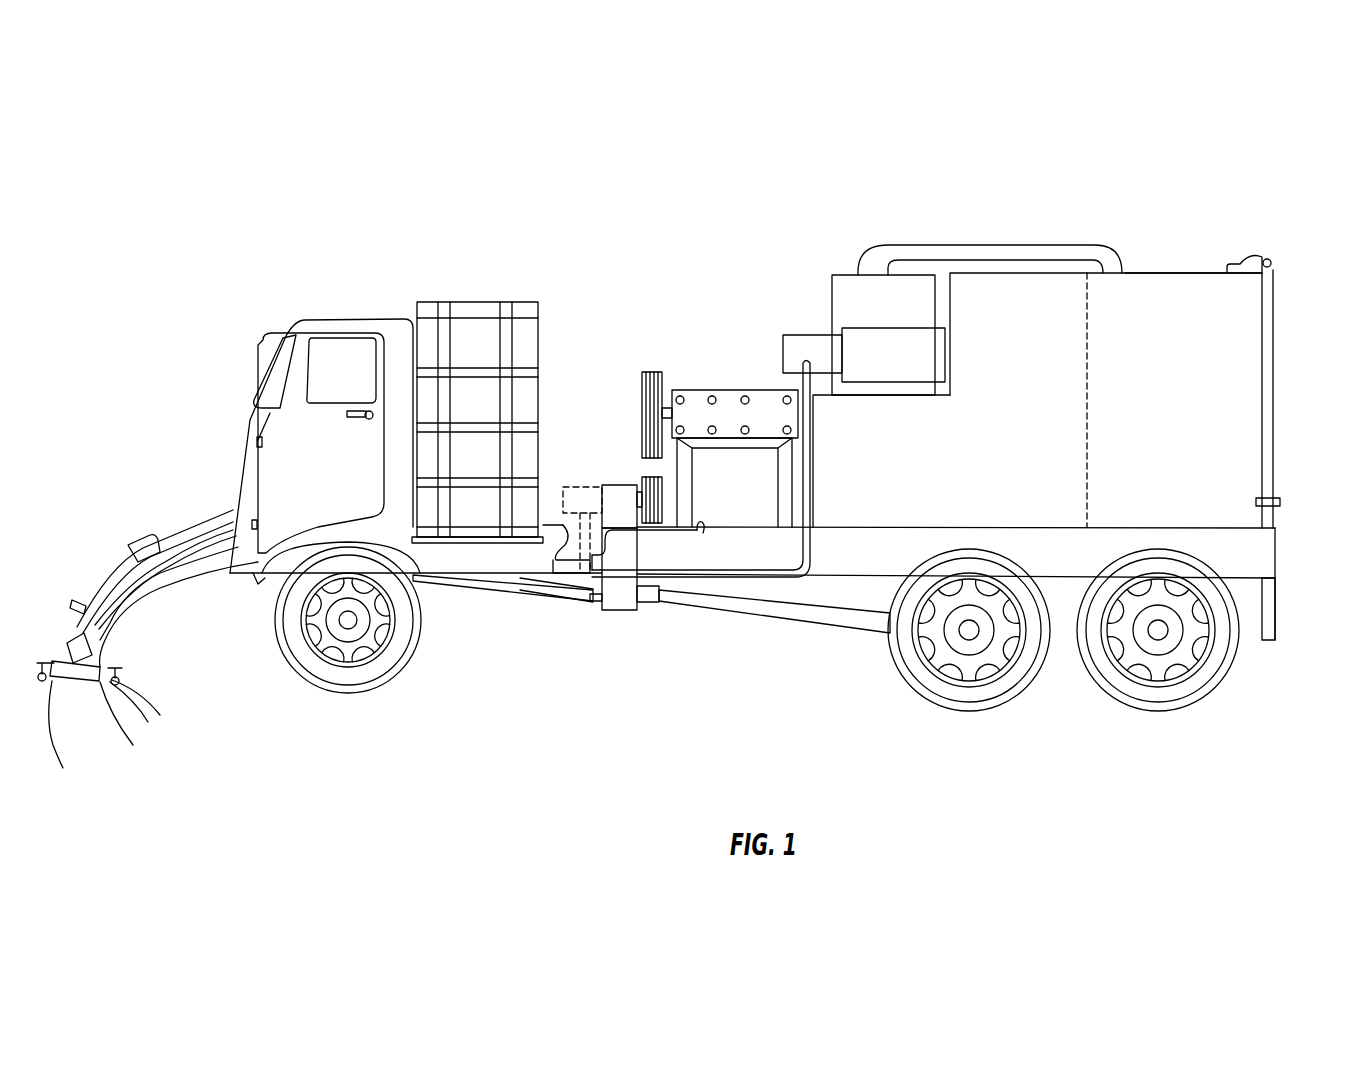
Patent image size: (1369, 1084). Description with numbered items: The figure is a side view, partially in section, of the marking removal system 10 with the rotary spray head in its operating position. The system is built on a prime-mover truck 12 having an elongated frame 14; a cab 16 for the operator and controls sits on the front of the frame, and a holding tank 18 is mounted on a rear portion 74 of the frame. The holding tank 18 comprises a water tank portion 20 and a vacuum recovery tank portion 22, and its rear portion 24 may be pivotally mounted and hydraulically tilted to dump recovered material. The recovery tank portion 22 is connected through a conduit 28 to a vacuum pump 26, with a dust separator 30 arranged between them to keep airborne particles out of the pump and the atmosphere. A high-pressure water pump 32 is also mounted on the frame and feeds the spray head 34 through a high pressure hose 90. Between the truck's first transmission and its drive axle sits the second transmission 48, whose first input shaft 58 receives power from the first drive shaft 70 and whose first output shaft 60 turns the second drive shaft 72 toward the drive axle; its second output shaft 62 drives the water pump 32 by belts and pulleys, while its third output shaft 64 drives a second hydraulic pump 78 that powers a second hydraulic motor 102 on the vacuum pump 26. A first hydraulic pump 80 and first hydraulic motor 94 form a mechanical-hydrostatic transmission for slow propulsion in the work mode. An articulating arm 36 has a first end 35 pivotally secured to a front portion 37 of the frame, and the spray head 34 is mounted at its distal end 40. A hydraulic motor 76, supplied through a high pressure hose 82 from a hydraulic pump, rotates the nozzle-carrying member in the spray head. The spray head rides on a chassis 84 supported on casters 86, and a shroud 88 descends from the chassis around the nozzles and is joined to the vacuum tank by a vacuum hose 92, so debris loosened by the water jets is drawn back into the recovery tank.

The marking removal system 10 is at (350, 184).
The prime-mover truck 12 is at (305, 313).
The elongated frame 14 is at (413, 563).
The cab 16 is at (382, 320).
The holding tank 18 is at (1148, 262).
The water tank portion 20 is at (985, 287).
The vacuum recovery tank portion 22 is at (1210, 290).
The rear portion of the holding tank 24 is at (1252, 518).
The vacuum pump 26 is at (858, 343).
The conduit 28 is at (920, 250).
The dust separator 30 is at (858, 290).
The high-pressure water pump 32 is at (723, 393).
The spray head 34 is at (78, 672).
The first end of the articulating arm 35 is at (233, 512).
The articulating arm 36 is at (170, 548).
The front portion of the frame 37 is at (258, 585).
The distal end of the articulating arm 40 is at (78, 640).
The second transmission 48 is at (615, 602).
The first input shaft 58 is at (597, 603).
The first output shaft 60 is at (642, 600).
The second output shaft 62 is at (640, 490).
The third output shaft 64 is at (602, 485).
The first drive shaft 70 is at (523, 587).
The second drive shaft 72 is at (813, 615).
The rear portion of the frame 74 is at (1245, 555).
The hydraulic motor 76 is at (68, 733).
The second hydraulic pump 78 is at (565, 487).
The first hydraulic pump 80 is at (565, 570).
The high pressure hose 82 is at (137, 608).
The chassis 84 is at (128, 683).
The casters 86 is at (148, 722).
The shroud 88 is at (133, 745).
The high pressure hose 90 is at (93, 627).
The vacuum hose 92 is at (173, 582).
The first hydraulic motor 94 is at (675, 563).
The second hydraulic motor 102 is at (795, 343).